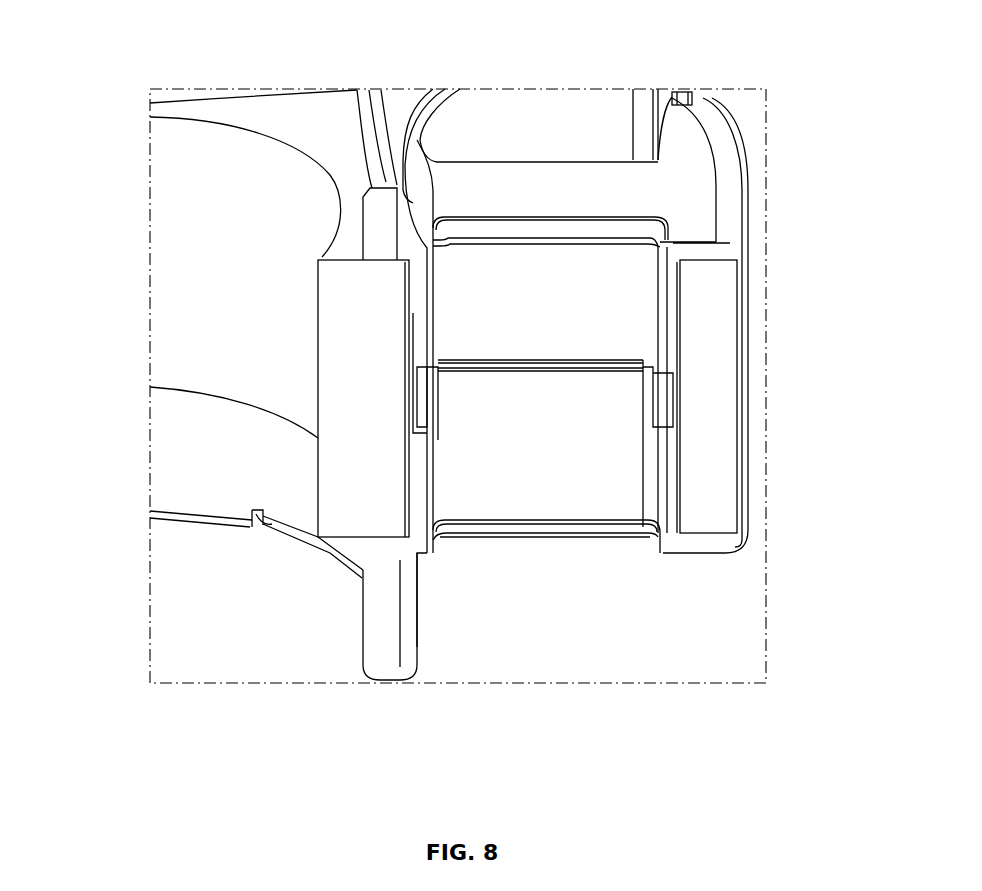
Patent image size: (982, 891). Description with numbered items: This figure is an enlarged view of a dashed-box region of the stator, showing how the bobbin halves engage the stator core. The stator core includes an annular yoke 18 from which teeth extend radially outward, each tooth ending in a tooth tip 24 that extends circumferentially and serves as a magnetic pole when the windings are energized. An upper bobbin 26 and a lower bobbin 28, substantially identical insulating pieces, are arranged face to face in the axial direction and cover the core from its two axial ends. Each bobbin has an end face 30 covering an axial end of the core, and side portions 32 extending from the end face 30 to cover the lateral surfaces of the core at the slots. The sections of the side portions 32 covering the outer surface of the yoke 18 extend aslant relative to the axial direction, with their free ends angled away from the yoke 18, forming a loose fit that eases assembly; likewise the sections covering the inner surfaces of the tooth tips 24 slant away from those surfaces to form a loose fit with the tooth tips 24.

The yoke 18 is at (352, 347).
The tooth tip 24 is at (708, 363).
The upper bobbin 26 is at (744, 147).
The lower bobbin 28 is at (703, 557).
The end face 30 is at (525, 195).
The side portion 32 is at (430, 293).